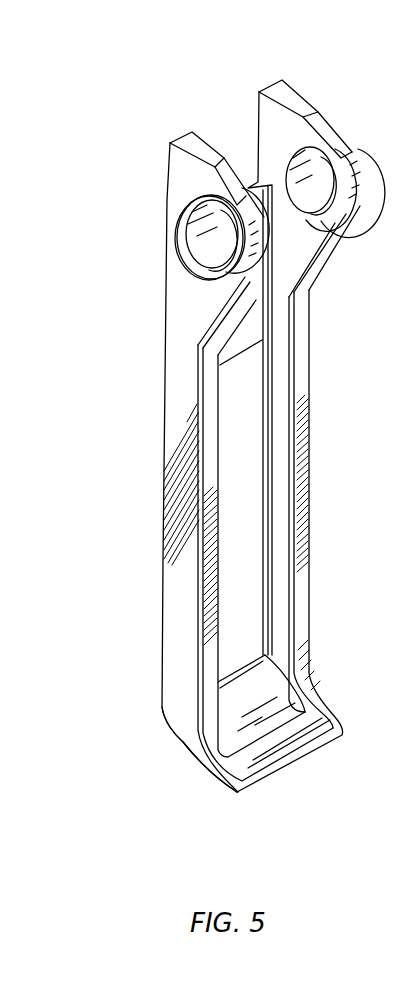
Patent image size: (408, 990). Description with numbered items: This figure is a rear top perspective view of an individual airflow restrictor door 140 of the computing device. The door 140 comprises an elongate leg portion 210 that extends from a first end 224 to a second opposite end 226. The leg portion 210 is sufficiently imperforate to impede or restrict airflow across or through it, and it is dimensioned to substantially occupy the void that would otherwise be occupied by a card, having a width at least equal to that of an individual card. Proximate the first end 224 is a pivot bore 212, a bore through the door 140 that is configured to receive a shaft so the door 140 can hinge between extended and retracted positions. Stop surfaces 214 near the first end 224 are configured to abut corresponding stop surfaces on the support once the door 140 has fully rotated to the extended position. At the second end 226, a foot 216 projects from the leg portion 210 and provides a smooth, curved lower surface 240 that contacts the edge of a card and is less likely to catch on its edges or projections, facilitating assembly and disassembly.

The door 140 is at (148, 96).
The first end 224 is at (158, 168).
The stop surfaces 214 is at (237, 168).
The pivot bore 212 is at (190, 250).
The leg portion 210 is at (162, 466).
The second end 226 is at (162, 731).
The lower surface 240 is at (198, 768).
The foot 216 is at (263, 779).